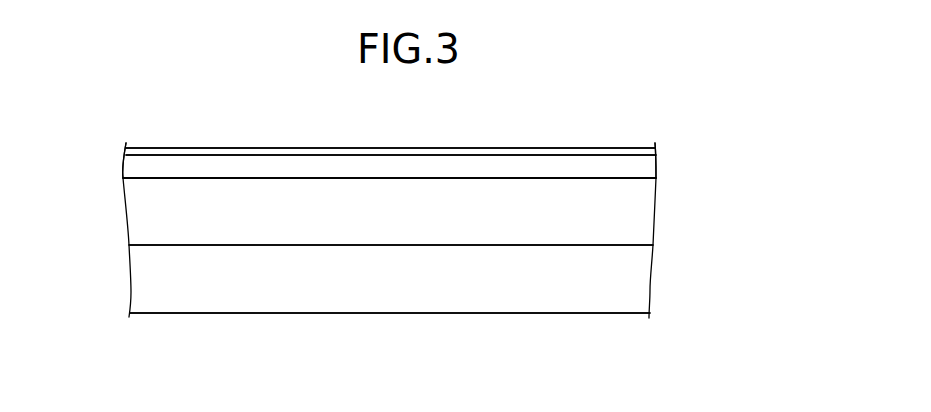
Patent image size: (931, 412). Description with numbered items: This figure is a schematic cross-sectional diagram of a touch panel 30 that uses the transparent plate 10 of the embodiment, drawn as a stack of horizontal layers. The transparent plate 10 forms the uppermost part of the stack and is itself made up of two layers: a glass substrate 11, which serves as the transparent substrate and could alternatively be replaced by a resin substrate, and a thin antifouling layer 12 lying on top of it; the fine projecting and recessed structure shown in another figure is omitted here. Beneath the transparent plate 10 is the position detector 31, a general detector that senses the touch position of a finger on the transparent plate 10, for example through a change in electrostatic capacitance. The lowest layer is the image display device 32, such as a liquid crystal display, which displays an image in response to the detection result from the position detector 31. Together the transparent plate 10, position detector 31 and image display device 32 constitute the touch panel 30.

The transparent plate 10 is at (716, 124).
The glass substrate 11 is at (641, 167).
The antifouling layer 12 is at (638, 150).
The touch panel 30 is at (778, 138).
The position detector 31 is at (633, 218).
The image display device 32 is at (633, 282).